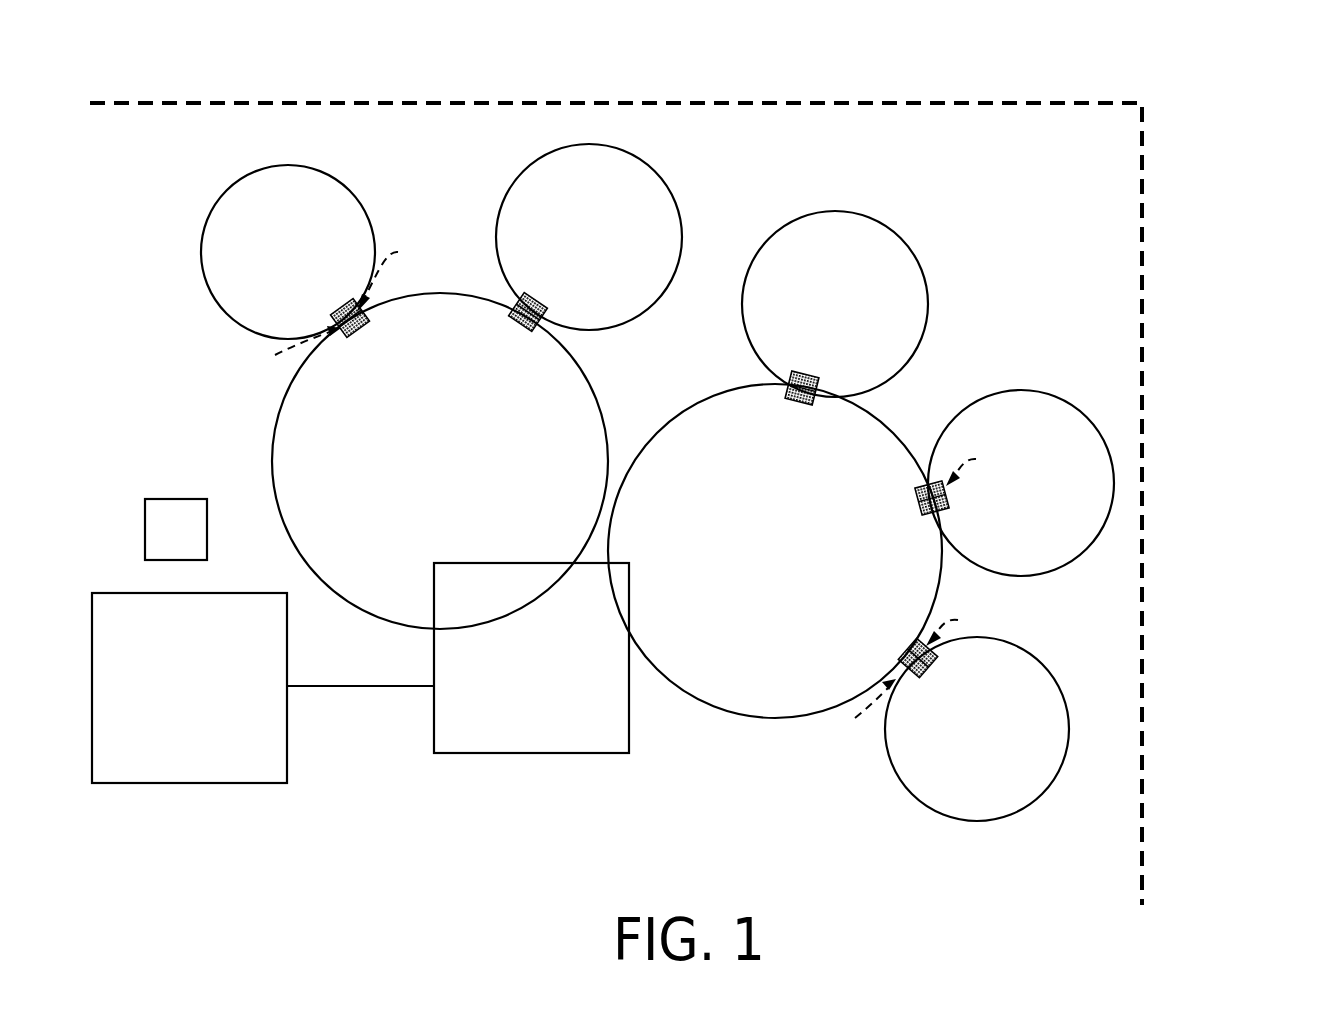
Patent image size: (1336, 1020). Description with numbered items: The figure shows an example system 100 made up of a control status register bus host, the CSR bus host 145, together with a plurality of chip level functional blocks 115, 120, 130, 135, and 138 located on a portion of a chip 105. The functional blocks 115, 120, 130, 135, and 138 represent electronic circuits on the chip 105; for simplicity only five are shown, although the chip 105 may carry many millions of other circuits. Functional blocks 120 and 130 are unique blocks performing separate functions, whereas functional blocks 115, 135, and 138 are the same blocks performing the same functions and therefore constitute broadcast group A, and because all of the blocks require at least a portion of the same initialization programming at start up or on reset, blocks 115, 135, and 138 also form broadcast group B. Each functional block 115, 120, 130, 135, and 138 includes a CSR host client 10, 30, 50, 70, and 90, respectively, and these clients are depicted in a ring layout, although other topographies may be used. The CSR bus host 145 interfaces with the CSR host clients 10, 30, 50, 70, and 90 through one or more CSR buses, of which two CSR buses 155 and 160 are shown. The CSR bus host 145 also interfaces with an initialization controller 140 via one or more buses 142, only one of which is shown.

The system 100 is at (1222, 88).
The chip 105 is at (156, 539).
The functional block 115 is at (268, 262).
The functional block 120 is at (815, 314).
The functional block 130 is at (569, 247).
The functional block 135 is at (1001, 494).
The functional block 138 is at (957, 739).
The CSR bus 155 is at (420, 471).
The CSR bus 160 is at (755, 561).
The initialization controller 140 is at (170, 697).
The bus 142 is at (337, 687).
The CSR bus host 145 is at (511, 666).
The CSR host client 10 is at (362, 328).
The CSR host client 30 is at (520, 322).
The CSR host client 50 is at (797, 405).
The CSR host client 70 is at (915, 500).
The CSR host client 90 is at (902, 655).